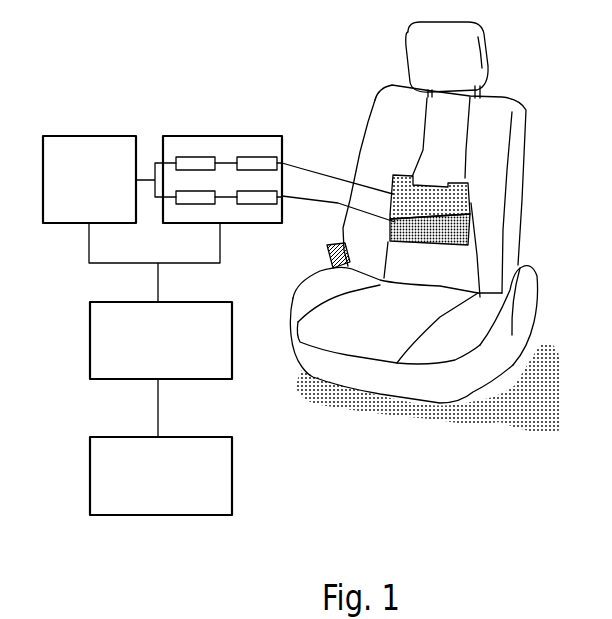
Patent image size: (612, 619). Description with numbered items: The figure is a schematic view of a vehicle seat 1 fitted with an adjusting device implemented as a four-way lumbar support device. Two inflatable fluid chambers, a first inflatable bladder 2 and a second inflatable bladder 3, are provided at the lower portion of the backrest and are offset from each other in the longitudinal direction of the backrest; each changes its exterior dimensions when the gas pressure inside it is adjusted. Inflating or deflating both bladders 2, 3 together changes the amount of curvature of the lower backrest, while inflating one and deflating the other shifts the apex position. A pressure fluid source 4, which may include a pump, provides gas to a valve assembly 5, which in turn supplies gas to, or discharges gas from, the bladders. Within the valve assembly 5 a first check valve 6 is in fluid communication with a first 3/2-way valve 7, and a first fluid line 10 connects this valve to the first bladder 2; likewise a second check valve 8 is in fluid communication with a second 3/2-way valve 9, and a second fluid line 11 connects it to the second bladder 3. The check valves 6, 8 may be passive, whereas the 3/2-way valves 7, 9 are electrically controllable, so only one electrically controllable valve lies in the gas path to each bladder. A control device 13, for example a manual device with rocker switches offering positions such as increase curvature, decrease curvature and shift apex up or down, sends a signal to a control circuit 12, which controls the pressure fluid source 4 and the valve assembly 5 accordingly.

The vehicle seat 1 is at (430, 227).
The first inflatable bladder 2 is at (468, 210).
The second inflatable bladder 3 is at (467, 235).
The pressure fluid source 4 is at (55, 136).
The valve assembly 5 is at (170, 136).
The first check valve 6 is at (208, 157).
The first 3/2-way valve 7 is at (269, 157).
The second check valve 8 is at (210, 197).
The second 3/2-way valve 9 is at (270, 200).
The first fluid line 10 is at (303, 169).
The second fluid line 11 is at (338, 203).
The control circuit 12 is at (90, 363).
The control device 13 is at (90, 498).